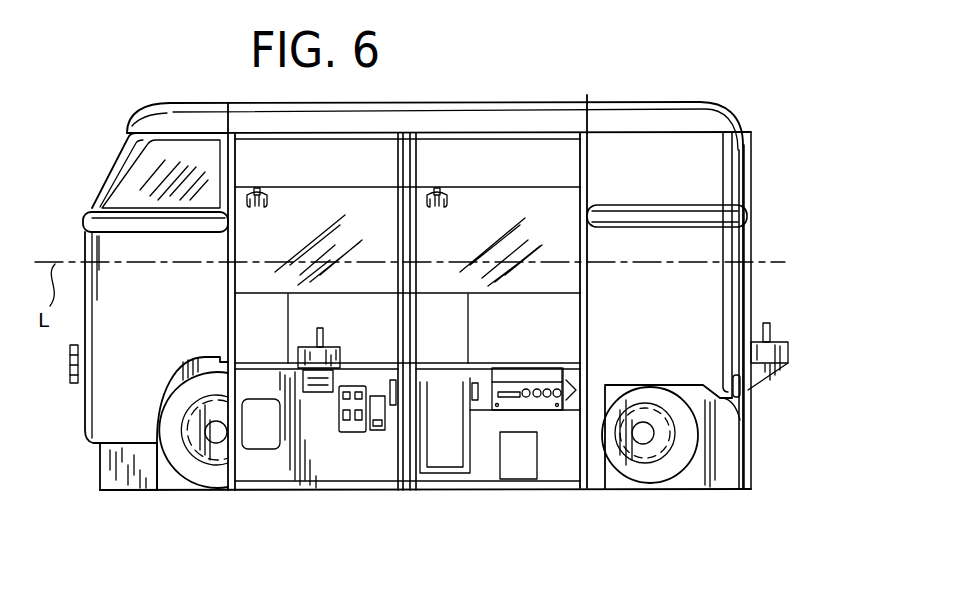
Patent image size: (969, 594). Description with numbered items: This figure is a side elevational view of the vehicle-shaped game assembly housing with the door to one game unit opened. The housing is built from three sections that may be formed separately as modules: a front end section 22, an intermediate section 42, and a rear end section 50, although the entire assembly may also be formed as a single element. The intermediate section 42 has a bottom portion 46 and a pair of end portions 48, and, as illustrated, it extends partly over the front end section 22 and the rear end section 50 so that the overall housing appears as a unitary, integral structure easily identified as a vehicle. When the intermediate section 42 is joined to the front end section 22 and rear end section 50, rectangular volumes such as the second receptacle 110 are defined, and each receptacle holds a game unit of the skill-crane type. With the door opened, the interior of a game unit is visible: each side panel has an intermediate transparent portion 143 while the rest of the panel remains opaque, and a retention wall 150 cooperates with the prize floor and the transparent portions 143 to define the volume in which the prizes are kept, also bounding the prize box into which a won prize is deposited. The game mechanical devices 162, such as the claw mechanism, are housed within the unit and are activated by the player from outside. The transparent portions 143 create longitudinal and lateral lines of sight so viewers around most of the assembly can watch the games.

The front end section 22 is at (64, 230).
The intermediate section 42 is at (477, 96).
The bottom portion 46 is at (522, 131).
The end portions 48 is at (228, 103).
The rear end section 50 is at (770, 152).
The second receptacle 110 is at (404, 506).
The intermediate transparent portion 143 is at (497, 219).
The retention wall 150 is at (535, 332).
The game mechanical devices 162 is at (547, 411).